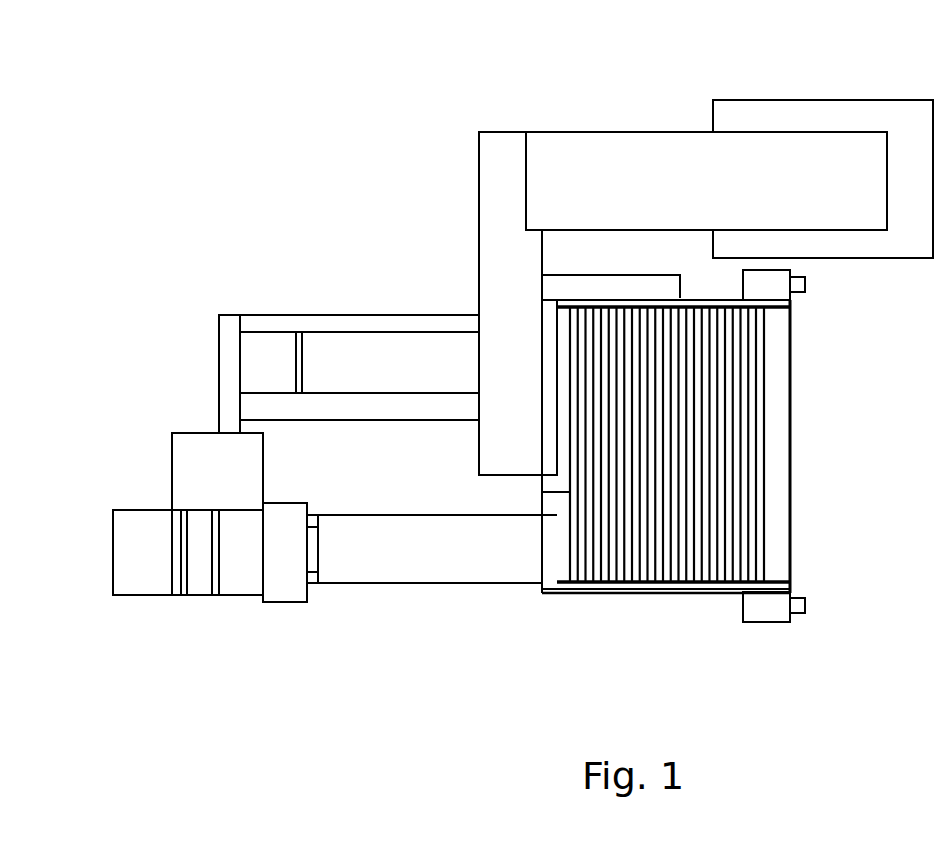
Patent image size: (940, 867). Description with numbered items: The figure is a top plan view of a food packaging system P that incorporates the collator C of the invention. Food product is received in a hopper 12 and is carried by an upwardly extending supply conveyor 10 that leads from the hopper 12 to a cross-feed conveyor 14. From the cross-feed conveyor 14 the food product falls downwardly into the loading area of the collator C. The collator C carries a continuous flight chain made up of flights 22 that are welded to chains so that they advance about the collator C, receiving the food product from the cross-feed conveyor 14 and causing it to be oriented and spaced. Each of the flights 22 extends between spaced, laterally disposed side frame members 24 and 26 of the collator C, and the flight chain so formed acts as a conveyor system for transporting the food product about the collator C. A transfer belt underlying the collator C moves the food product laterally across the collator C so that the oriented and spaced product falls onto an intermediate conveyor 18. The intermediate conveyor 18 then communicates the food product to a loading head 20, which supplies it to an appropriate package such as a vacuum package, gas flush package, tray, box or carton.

The packaging system P is at (459, 74).
The collator C is at (818, 376).
The supply conveyor 10 is at (570, 136).
The hopper 12 is at (797, 107).
The cross-feed conveyor 14 is at (493, 266).
The intermediate conveyor 18 is at (399, 563).
The loading head 20 is at (136, 520).
The flights 22 is at (757, 495).
The side frame member 24 is at (693, 303).
The side frame member 26 is at (662, 585).